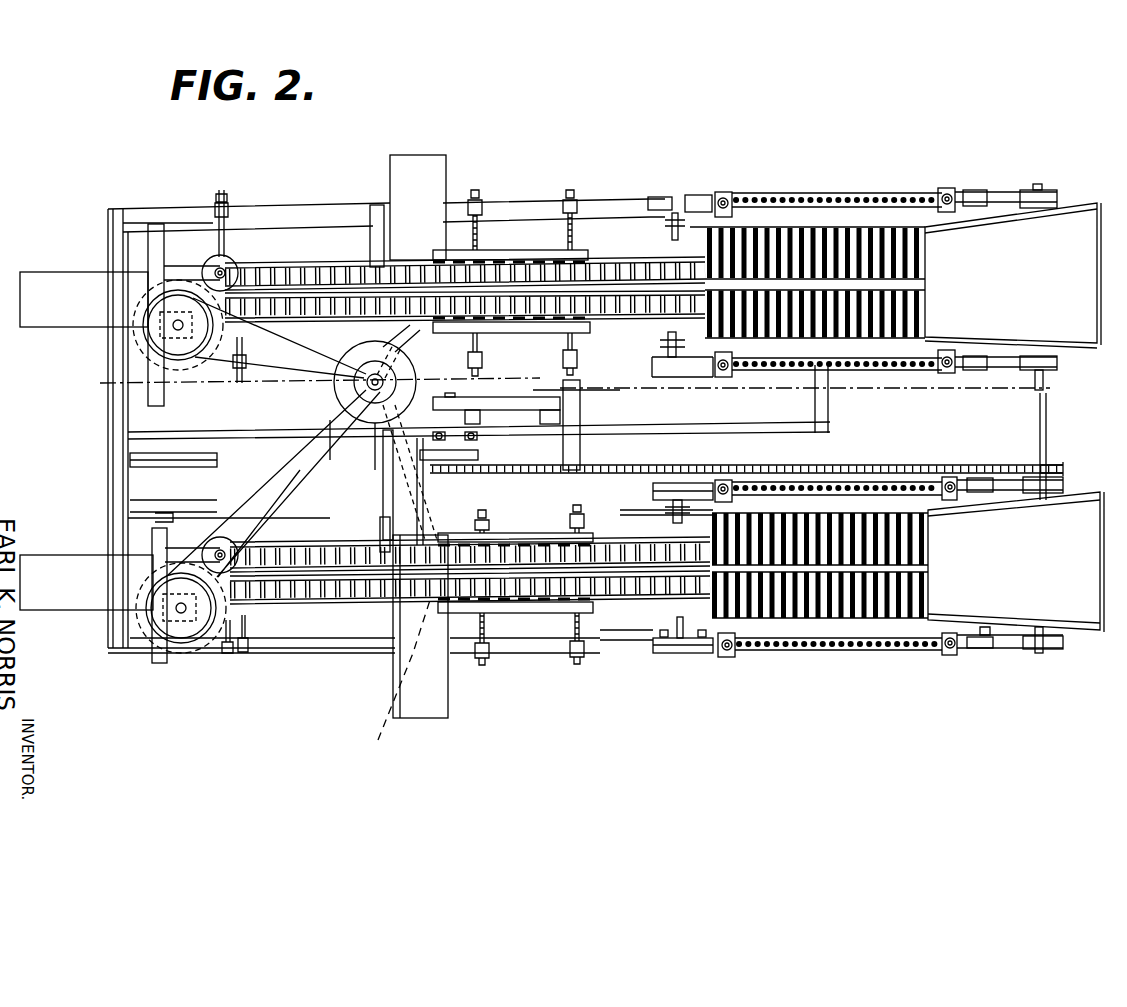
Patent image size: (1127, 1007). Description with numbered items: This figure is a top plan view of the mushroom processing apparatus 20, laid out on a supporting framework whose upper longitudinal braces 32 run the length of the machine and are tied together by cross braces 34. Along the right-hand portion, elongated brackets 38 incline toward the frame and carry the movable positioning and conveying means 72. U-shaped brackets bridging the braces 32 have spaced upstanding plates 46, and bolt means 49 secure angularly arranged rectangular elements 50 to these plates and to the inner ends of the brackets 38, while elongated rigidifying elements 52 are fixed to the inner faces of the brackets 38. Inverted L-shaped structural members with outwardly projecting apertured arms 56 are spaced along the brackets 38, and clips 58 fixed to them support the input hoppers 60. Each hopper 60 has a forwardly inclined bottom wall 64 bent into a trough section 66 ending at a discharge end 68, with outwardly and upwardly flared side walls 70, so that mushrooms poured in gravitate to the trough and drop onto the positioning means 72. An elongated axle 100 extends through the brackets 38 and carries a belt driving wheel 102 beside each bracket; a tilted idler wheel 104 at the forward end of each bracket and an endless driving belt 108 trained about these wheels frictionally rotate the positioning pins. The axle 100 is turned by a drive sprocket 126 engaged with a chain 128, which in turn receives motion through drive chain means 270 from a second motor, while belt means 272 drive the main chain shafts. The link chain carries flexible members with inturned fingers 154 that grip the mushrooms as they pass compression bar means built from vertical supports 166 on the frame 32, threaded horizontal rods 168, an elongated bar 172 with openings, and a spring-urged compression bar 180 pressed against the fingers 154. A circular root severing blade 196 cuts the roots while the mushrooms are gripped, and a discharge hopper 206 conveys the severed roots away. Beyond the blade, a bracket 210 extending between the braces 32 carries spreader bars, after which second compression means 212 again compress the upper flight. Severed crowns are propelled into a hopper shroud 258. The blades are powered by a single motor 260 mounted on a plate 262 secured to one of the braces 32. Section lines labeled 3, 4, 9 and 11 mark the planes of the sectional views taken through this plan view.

The apparatus 20 is at (840, 157).
The upper longitudinal braces 32 is at (287, 211).
The cross braces 34 is at (115, 357).
The bracket 210 is at (372, 240).
The side walls 70 is at (1067, 213).
The input hoppers 60 is at (1098, 237).
The bottom wall 64 is at (1084, 277).
The trough section 66 is at (925, 278).
The discharge end 68 is at (925, 312).
The motor 260 is at (335, 392).
The plate 262 is at (256, 454).
The drive chain means 270 is at (877, 371).
The belt means 272 is at (233, 507).
The hopper shroud 258 is at (62, 608).
The second compression means 212 is at (266, 620).
The inturned fingers 154 is at (385, 632).
The root severing blade 196 is at (394, 680).
The compression bar 180 is at (453, 612).
The discharge hopper 206 is at (443, 703).
The vertical supports 166 is at (493, 660).
The bar 172 is at (543, 620).
The threaded horizontal rods 168 is at (488, 631).
The chain 128 is at (913, 463).
The drive sprocket 126 is at (1063, 463).
The axle 100 is at (1042, 427).
The rigidifying elements 52 is at (853, 513).
The bolt means 49 is at (705, 630).
The upstanding plates 46 is at (680, 628).
The rectangular elements 50 is at (688, 628).
The positioning and conveying means 72 is at (797, 622).
The idler wheel 104 is at (673, 653).
The clips 58 is at (950, 627).
The brackets 38 is at (882, 645).
The apertured arms 56 is at (963, 645).
The endless driving belt 108 is at (1013, 646).
The belt driving wheel 102 is at (1057, 648).
The section line 3- 3 is at (97, 430).
The section line 4- 4 is at (635, 498).
The section line 9- 9 is at (580, 492).
The section line 11- 11 is at (275, 490).